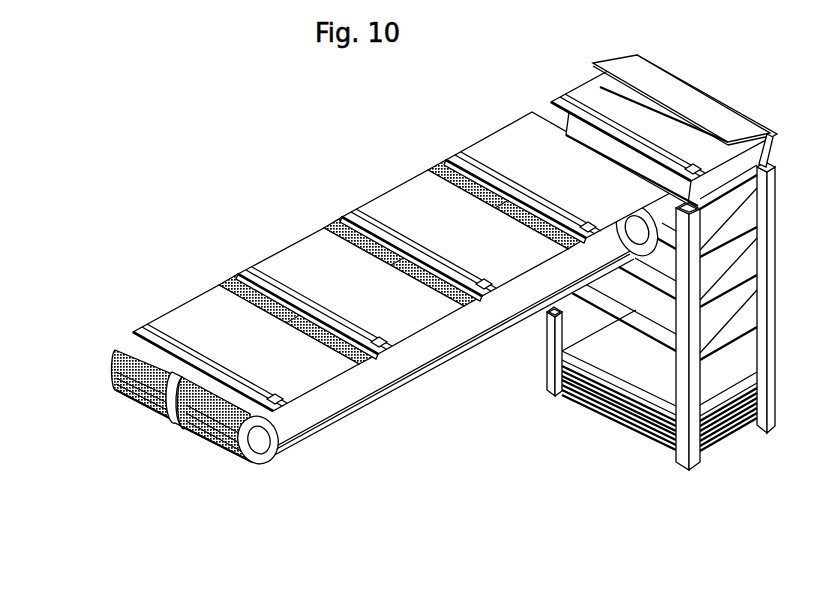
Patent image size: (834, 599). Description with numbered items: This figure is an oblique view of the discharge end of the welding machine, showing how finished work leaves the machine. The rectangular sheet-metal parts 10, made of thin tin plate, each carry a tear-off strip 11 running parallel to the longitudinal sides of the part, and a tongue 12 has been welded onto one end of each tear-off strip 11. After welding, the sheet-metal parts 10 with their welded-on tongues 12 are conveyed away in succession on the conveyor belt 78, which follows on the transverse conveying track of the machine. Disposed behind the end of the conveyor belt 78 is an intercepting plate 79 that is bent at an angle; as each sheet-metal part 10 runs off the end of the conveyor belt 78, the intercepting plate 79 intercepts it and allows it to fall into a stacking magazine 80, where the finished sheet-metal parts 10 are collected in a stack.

The sheet-metal part 10 is at (234, 354).
The tear-off strip 11 is at (177, 344).
The tongue 12 is at (276, 396).
The conveyor belt 78 is at (434, 171).
The intercepting plate 79 is at (670, 88).
The stacking magazine 80 is at (536, 399).